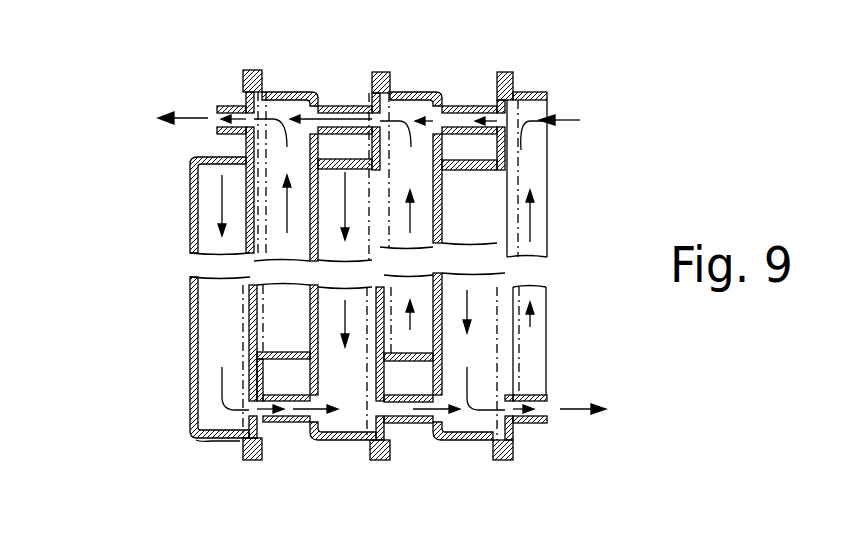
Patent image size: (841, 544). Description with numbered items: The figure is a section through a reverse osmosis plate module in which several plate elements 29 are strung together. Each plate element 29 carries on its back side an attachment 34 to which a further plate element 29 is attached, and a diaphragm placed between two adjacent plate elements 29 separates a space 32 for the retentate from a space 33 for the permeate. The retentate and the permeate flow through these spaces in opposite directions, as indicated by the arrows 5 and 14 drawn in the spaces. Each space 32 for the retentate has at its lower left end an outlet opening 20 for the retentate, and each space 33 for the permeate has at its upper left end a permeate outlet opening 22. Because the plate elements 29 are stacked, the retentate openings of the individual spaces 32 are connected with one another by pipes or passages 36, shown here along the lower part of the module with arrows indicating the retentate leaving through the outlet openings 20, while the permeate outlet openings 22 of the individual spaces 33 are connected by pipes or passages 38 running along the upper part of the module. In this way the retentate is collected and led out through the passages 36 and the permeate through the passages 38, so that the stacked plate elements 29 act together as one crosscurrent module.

The permeate outlet opening 22 is at (244, 86).
The plate element 29 is at (278, 91).
The pipe or passage 38 is at (328, 106).
The space for the retentate 32 is at (217, 182).
The space for the permeate 33 is at (402, 293).
The arrow 5 is at (217, 207).
The arrow 14 is at (293, 215).
The pipe or passage 36 is at (288, 428).
The attachment 34 is at (337, 441).
The outlet opening 20 is at (218, 440).